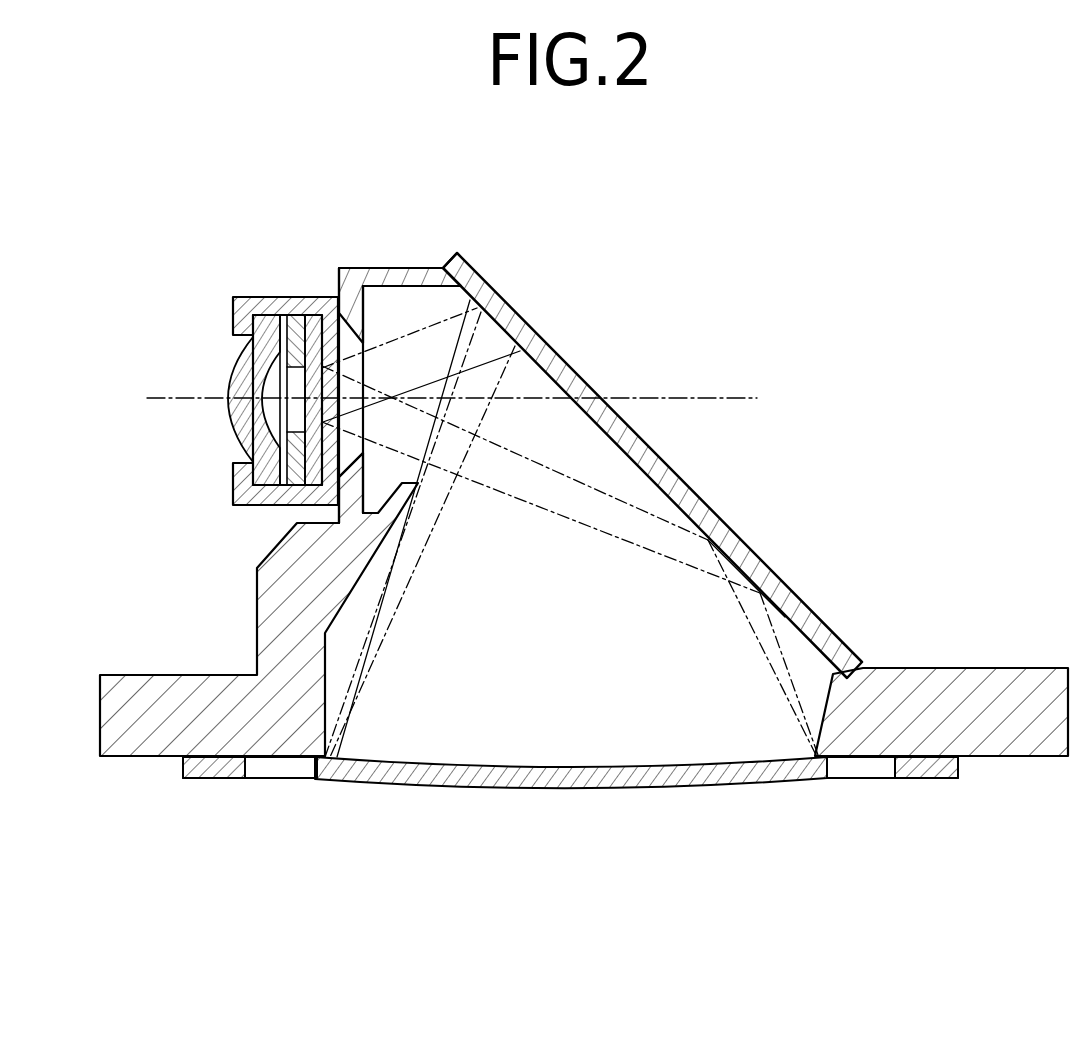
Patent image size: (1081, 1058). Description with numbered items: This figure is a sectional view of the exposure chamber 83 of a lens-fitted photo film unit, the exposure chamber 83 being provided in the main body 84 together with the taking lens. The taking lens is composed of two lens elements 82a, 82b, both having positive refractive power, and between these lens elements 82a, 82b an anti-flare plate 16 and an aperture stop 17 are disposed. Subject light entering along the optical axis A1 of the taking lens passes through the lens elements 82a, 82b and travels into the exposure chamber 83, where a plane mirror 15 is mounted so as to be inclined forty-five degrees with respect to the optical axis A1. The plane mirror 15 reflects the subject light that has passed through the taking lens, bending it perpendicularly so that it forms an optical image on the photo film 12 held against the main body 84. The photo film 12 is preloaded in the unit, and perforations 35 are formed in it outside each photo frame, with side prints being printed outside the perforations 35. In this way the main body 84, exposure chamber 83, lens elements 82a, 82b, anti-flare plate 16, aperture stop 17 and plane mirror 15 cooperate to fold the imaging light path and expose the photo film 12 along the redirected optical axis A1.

The photo filmstrip 12 is at (563, 778).
The plane mirror 15 is at (688, 486).
The anti-flare plate 16 is at (288, 317).
The aperture stop 17 is at (299, 330).
The perforations 35 is at (284, 768).
The lens element 82a is at (240, 368).
The lens element 82b is at (313, 327).
The exposure chamber 83 is at (383, 300).
The main body 84 is at (255, 628).
The optical axis A1 is at (673, 397).